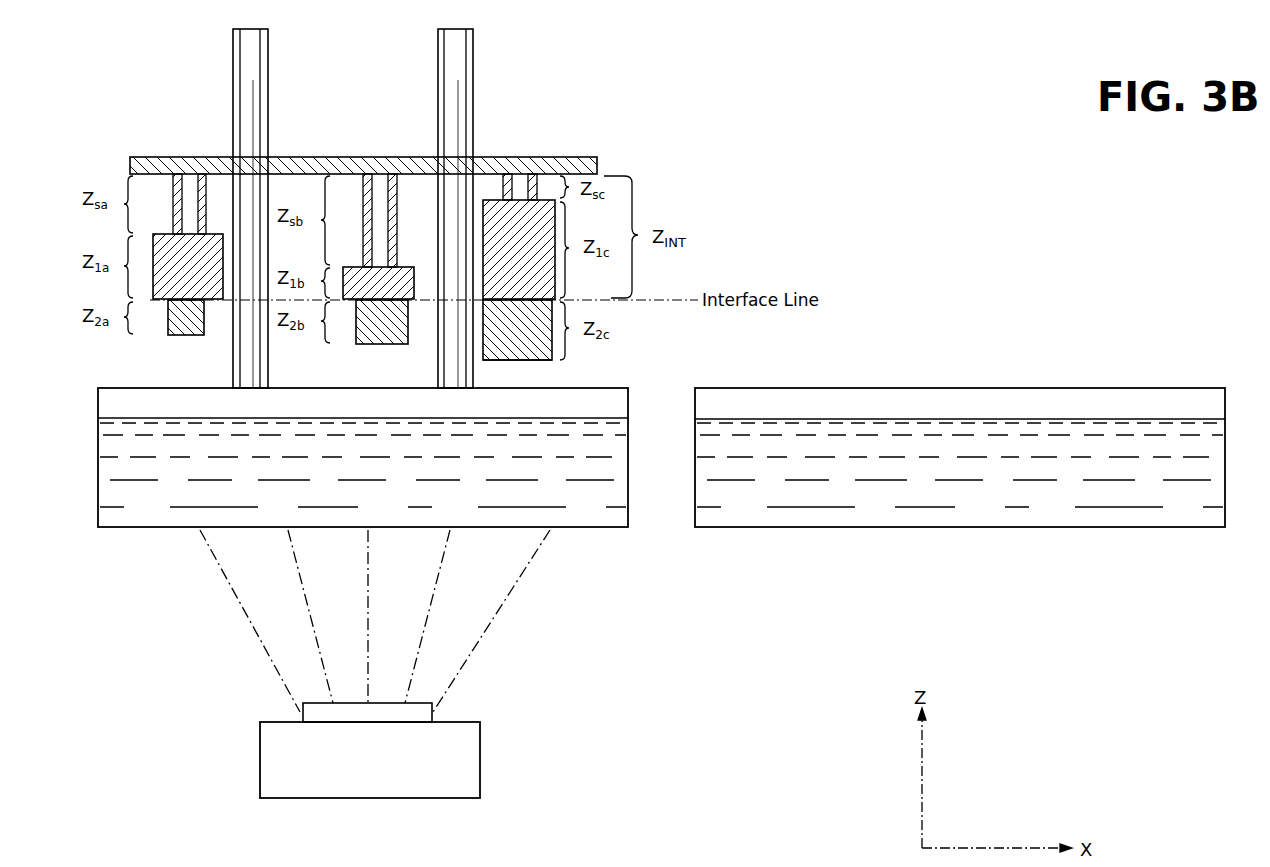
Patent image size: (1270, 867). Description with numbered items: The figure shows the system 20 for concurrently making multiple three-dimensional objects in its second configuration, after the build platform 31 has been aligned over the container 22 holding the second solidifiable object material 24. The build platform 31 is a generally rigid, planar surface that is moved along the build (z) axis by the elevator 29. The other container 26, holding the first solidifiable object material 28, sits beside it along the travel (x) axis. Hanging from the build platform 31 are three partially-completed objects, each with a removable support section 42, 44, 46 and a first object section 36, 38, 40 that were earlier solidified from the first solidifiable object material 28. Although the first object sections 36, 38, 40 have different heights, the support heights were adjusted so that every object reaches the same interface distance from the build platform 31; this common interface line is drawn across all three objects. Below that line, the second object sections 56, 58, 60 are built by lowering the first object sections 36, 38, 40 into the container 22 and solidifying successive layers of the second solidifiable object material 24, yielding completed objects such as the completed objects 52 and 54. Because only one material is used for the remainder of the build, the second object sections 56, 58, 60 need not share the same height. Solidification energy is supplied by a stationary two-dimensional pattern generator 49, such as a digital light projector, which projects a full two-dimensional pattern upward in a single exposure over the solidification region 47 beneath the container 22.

The system 20 is at (692, 135).
The container 22 is at (128, 528).
The second solidifiable object material 24 is at (360, 470).
The container 26 is at (1225, 470).
The first solidifiable object material 28 is at (970, 470).
The elevator 29 is at (438, 97).
The build platform 31 is at (190, 157).
The first object section 36 is at (198, 278).
The first object section 38 is at (387, 293).
The first object section 40 is at (529, 258).
The removable support section 42 is at (173, 190).
The removable support section 44 is at (363, 190).
The removable support section 46 is at (530, 157).
The solidification region 47 is at (247, 616).
The two-dimensional pattern generator 49 is at (380, 774).
The completed object 52 is at (397, 228).
The completed object 54 is at (518, 360).
The second object section 56 is at (196, 325).
The second object section 58 is at (390, 331).
The second object section 60 is at (527, 335).